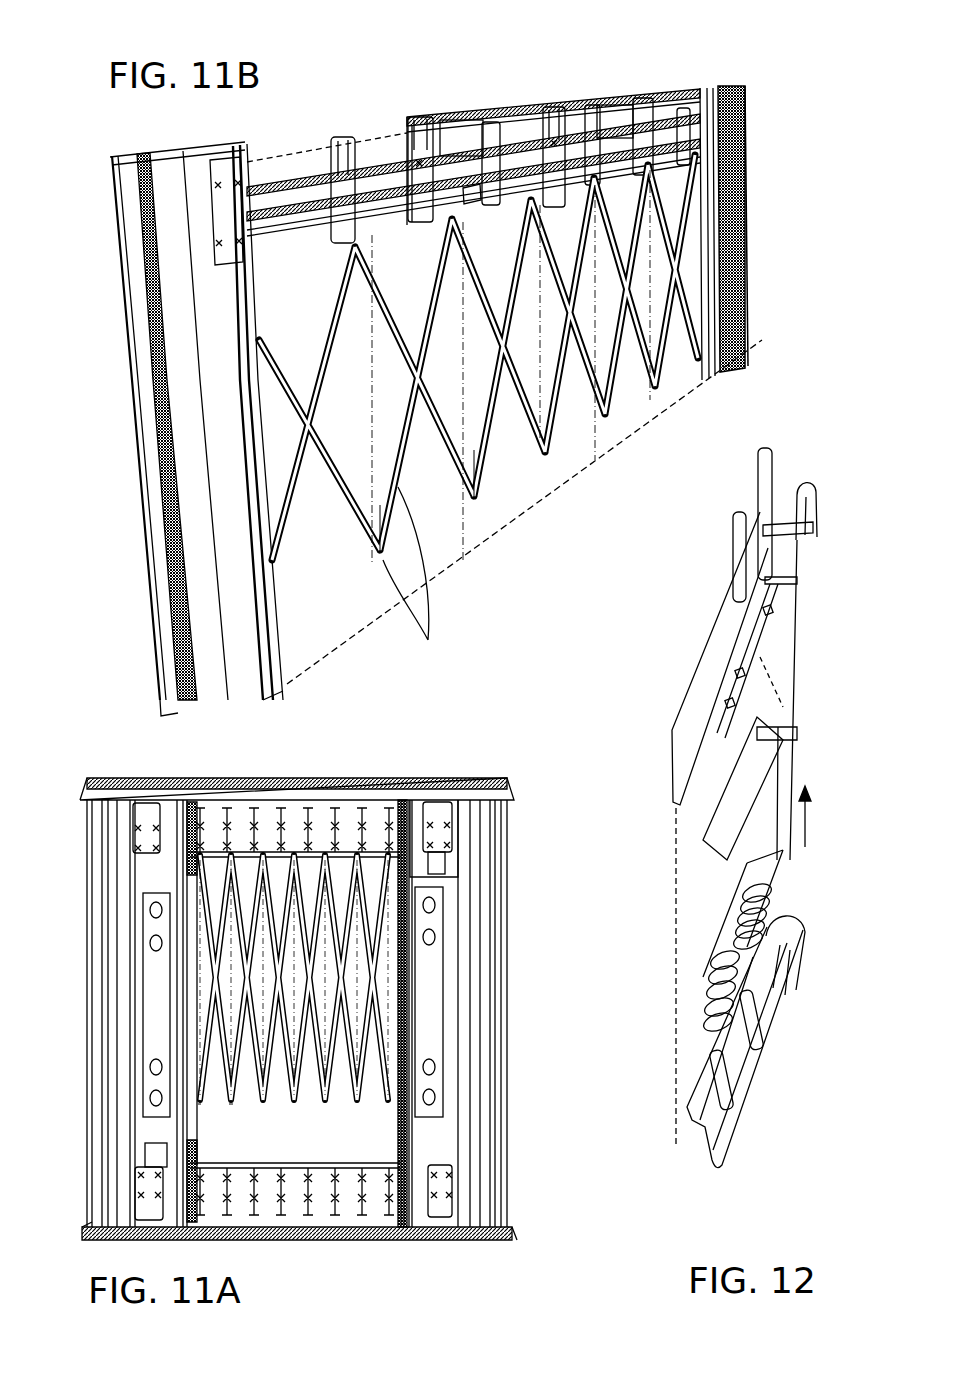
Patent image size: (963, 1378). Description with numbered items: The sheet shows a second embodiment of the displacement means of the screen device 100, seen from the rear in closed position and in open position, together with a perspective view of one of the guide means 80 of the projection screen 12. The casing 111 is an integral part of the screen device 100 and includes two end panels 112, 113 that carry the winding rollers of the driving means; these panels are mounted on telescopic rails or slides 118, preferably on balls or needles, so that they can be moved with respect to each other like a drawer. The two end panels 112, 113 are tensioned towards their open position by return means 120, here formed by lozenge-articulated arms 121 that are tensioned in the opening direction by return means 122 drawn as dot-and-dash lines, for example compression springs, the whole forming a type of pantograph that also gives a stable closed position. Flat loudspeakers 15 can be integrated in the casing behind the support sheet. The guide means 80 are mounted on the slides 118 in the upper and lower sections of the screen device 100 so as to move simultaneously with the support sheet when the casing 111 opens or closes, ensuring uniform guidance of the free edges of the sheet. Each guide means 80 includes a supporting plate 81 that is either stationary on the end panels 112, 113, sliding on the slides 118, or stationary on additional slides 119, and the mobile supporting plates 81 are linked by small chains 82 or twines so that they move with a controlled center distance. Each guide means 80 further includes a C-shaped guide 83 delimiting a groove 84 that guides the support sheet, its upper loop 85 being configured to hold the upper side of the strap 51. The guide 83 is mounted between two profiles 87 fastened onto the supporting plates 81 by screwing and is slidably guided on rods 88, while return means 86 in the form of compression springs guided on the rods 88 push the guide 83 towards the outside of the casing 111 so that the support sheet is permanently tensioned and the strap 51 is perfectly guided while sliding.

In FIG. 11B, the projection screen 12 is at (576, 462).
In FIG. 11A, the projection screen 12 is at (243, 1140).
In FIG. 12, the projection screen 12 is at (676, 1058).
In FIG. 11A, the loudspeakers 15 is at (152, 962).
In FIG. 12, the strap 51 is at (788, 672).
In FIG. 11B, the guide means 80 is at (391, 154).
In FIG. 11A, the guide means 80 is at (290, 997).
In FIG. 12, the guide means 80 is at (764, 774).
In FIG. 11B, the supporting plate 81 is at (226, 170).
In FIG. 11A, the supporting plate 81 is at (390, 810).
In FIG. 11B, the small chains 82 is at (395, 150).
In FIG. 11A, the small chains 82 is at (297, 800).
In FIG. 12, the C-shaped guide 83 is at (776, 650).
In FIG. 12, the groove 84 is at (793, 733).
In FIG. 12, the upper loop 85 is at (722, 638).
In FIG. 12, the return means 86 is at (775, 908).
In FIG. 12, the profiles 87 is at (815, 500).
In FIG. 12, the rods 88 is at (735, 520).
In FIG. 11B, the screen device 100 is at (458, 367).
In FIG. 11A, the screen device 100 is at (321, 981).
In FIG. 11B, the casing 111 is at (745, 167).
In FIG. 11B, the end panel 112 is at (704, 88).
In FIG. 11A, the end panel 112 is at (484, 862).
In FIG. 11B, the end panel 113 is at (162, 156).
In FIG. 11A, the end panel 113 is at (122, 835).
In FIG. 11B, the telescopic rails or slides 118 is at (447, 160).
In FIG. 11B, the additional slides 119 is at (430, 225).
In FIG. 11B, the return means 120 is at (390, 412).
In FIG. 11A, the return means 120 is at (209, 977).
In FIG. 11B, the lozenge-articulated arms 121 is at (373, 433).
In FIG. 11A, the lozenge-articulated arms 121 is at (222, 903).
In FIG. 11B, the return means 122 is at (490, 494).
In FIG. 11A, the return means 122 is at (227, 990).